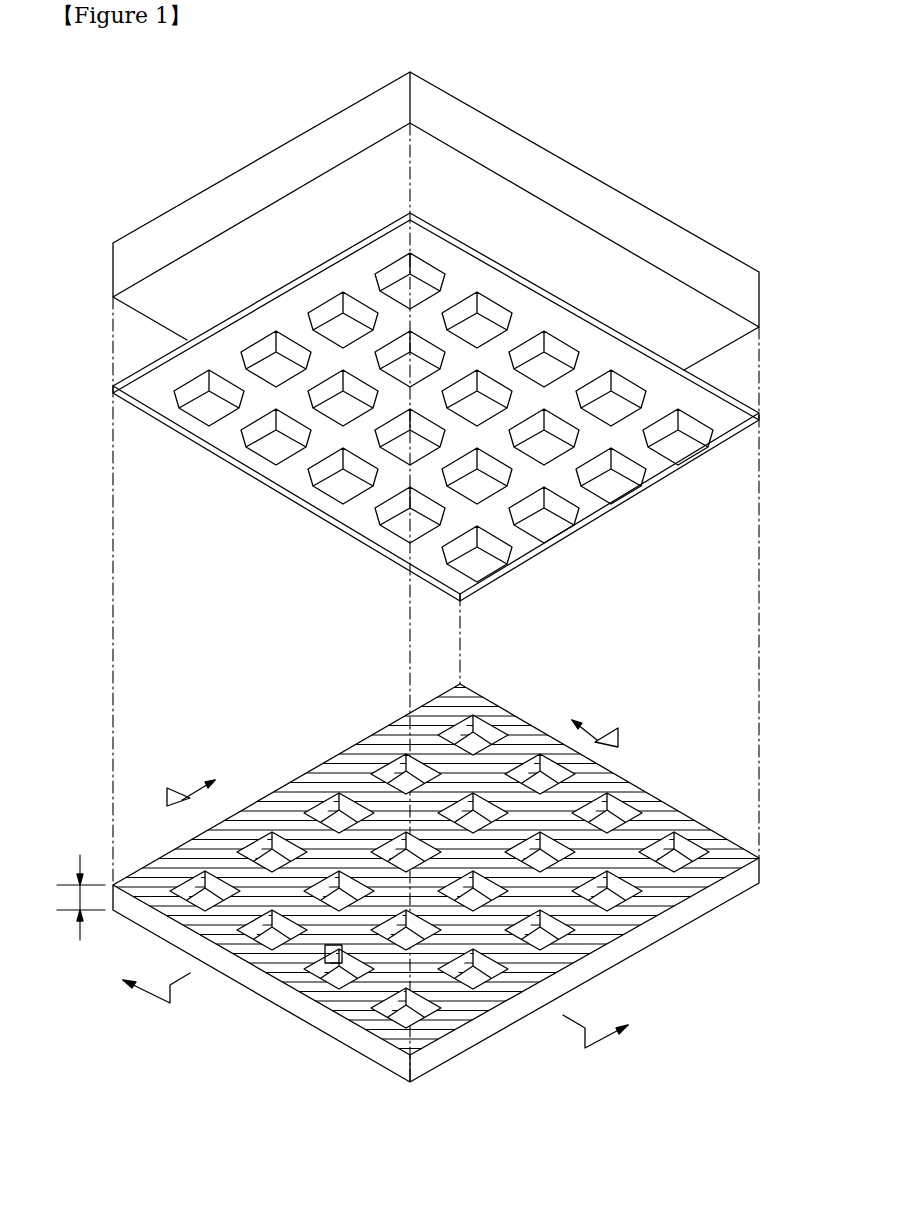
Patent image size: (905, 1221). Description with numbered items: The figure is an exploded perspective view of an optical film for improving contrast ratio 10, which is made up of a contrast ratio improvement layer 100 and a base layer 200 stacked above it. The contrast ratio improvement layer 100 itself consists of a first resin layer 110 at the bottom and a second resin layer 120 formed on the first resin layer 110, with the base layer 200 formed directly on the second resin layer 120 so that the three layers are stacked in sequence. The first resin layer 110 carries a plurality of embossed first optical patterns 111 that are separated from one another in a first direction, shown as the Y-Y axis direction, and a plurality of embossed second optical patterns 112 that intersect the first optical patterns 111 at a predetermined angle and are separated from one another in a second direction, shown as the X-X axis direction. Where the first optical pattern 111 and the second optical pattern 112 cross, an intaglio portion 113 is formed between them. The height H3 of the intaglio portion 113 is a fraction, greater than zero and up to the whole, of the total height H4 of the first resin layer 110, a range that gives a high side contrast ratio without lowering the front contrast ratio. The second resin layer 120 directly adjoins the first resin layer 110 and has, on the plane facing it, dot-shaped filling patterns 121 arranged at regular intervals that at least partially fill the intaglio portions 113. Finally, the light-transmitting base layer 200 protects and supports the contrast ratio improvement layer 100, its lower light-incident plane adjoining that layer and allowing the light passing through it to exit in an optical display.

The optical film for improving contrast ratio 10 is at (698, 153).
The base layer 200 is at (583, 185).
The contrast ratio improvement layer 100 is at (771, 894).
The second resin layer 120 is at (272, 522).
The filling pattern 121 is at (203, 407).
The first resin layer 110 is at (655, 772).
The first optical pattern 111 is at (400, 962).
The second optical pattern 112 is at (360, 832).
The intaglio portion 113 is at (343, 972).
The height of the intaglio portion H3 is at (315, 955).
The total height of the first resin layer H4 is at (71, 897).